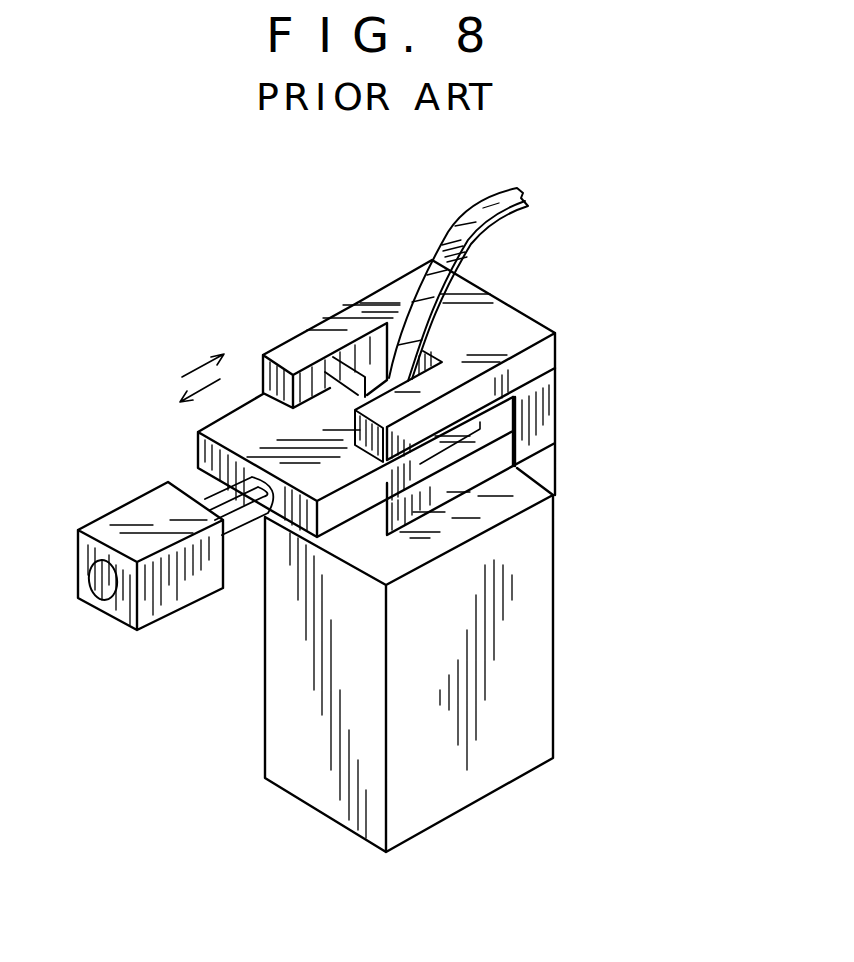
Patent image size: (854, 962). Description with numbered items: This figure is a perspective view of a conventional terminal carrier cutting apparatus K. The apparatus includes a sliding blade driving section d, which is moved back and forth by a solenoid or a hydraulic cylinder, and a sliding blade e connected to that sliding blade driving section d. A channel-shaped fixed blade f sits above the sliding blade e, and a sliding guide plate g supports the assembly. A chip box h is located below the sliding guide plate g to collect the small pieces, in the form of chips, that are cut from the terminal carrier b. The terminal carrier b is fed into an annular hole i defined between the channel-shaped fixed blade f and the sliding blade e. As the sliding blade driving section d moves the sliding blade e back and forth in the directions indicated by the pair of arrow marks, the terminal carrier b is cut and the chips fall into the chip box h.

The terminal carrier b is at (478, 234).
The sliding blade driving section d is at (152, 528).
The sliding blade e is at (268, 443).
The channel-shaped fixed blade f is at (373, 317).
The sliding guide plate g is at (516, 455).
The chip box h is at (498, 652).
The annular hole i is at (328, 358).
The terminal carrier cutting apparatus K is at (600, 491).